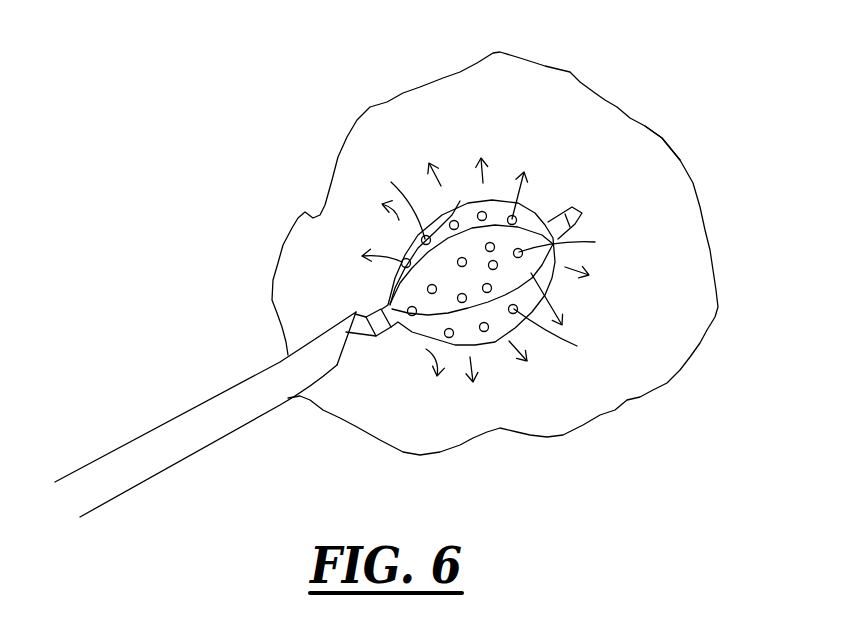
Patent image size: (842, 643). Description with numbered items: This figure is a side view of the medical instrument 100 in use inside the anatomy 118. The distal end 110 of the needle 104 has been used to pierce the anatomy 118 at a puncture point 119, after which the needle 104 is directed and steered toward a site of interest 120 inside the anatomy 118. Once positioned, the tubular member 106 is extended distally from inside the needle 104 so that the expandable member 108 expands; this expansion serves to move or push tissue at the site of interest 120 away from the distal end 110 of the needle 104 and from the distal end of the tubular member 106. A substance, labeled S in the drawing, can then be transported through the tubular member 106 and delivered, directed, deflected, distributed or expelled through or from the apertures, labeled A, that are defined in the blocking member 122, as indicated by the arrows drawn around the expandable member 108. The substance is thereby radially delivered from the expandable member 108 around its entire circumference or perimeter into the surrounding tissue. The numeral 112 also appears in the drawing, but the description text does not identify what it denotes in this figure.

The medical instrument 100 is at (176, 343).
The needle 104 is at (112, 481).
The tubular member 106 is at (436, 311).
The expandable member 108 is at (508, 133).
The distal end 110 is at (344, 368).
The apertures 112 is at (401, 286).
The anatomy 118 is at (609, 102).
The puncture point 119 is at (288, 353).
The site of interest 120 is at (652, 158).
The blocking member 122 is at (460, 201).